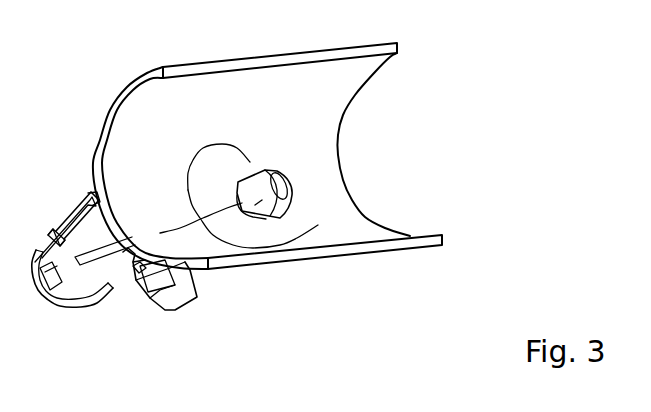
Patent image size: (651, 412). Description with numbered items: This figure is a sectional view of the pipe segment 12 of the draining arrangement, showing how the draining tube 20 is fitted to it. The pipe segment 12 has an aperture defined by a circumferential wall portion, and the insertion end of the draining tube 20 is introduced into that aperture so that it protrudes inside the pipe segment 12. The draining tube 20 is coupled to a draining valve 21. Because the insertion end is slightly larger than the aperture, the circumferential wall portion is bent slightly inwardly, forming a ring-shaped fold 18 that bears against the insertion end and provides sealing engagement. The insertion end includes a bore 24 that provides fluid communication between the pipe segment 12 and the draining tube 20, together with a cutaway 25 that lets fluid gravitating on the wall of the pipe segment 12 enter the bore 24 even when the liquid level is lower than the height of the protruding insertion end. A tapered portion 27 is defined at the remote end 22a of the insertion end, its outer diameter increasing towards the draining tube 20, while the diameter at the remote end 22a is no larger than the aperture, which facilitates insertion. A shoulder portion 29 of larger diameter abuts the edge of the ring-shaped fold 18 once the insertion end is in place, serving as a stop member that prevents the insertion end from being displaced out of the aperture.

The pipe segment 12 is at (213, 110).
The ring-shaped fold 18 is at (235, 188).
The draining tube 20 is at (177, 300).
The draining valve 21 is at (43, 230).
The remote end 22a is at (270, 163).
The bore 24 is at (290, 183).
The cutaway 25 is at (282, 205).
The tapered portion 27 is at (267, 197).
The shoulder portion 29 is at (140, 267).